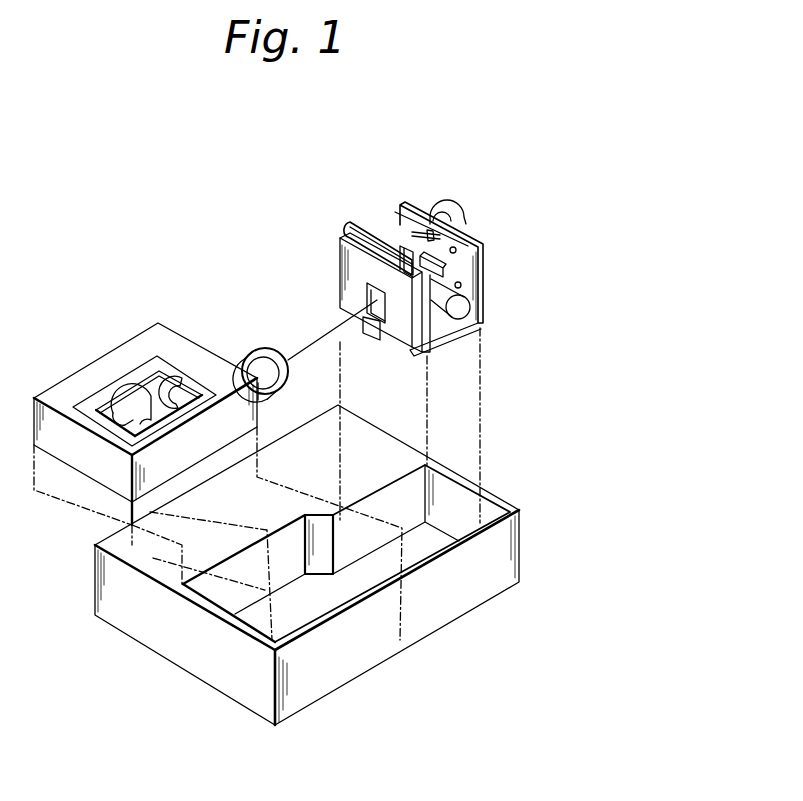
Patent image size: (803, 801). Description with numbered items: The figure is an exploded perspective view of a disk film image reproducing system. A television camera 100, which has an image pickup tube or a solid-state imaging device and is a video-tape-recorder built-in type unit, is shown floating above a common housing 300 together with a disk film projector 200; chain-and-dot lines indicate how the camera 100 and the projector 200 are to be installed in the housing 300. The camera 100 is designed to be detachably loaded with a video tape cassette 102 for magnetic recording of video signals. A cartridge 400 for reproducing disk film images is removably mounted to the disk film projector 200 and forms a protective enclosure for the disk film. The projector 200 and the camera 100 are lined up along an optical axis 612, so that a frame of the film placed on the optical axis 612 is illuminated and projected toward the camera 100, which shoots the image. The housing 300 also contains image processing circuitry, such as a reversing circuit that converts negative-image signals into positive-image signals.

The television camera 100 is at (146, 330).
The video tape cassette 102 is at (124, 402).
The disk film projector 200 is at (327, 248).
The common housing 300 is at (421, 627).
The cartridge 400 is at (348, 222).
The optical axis 612 is at (300, 352).